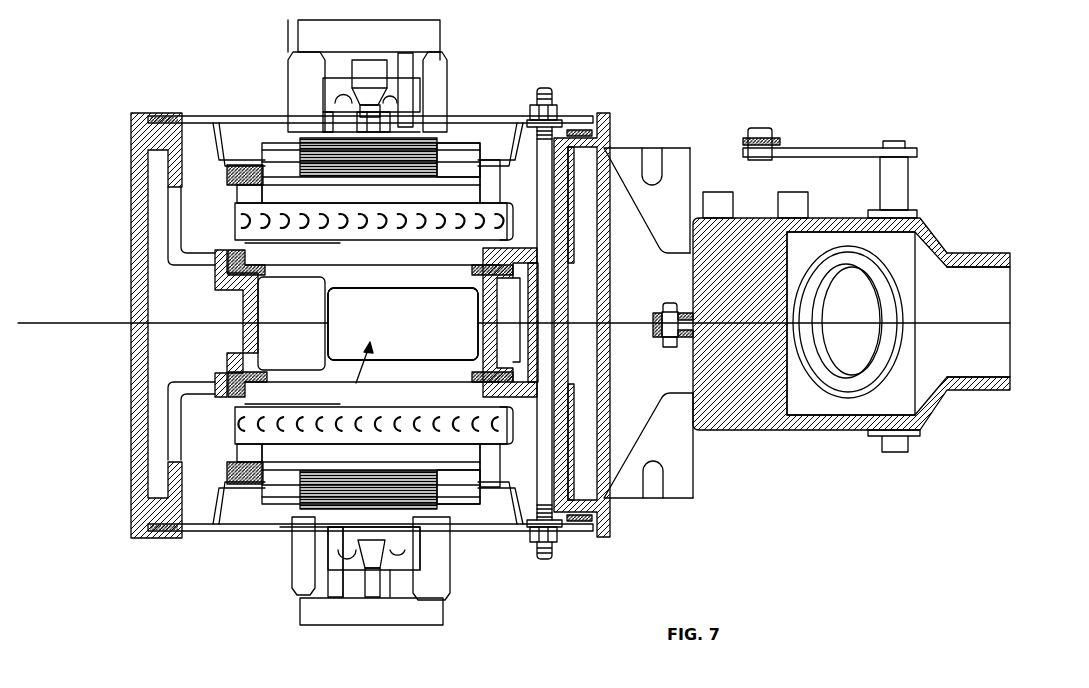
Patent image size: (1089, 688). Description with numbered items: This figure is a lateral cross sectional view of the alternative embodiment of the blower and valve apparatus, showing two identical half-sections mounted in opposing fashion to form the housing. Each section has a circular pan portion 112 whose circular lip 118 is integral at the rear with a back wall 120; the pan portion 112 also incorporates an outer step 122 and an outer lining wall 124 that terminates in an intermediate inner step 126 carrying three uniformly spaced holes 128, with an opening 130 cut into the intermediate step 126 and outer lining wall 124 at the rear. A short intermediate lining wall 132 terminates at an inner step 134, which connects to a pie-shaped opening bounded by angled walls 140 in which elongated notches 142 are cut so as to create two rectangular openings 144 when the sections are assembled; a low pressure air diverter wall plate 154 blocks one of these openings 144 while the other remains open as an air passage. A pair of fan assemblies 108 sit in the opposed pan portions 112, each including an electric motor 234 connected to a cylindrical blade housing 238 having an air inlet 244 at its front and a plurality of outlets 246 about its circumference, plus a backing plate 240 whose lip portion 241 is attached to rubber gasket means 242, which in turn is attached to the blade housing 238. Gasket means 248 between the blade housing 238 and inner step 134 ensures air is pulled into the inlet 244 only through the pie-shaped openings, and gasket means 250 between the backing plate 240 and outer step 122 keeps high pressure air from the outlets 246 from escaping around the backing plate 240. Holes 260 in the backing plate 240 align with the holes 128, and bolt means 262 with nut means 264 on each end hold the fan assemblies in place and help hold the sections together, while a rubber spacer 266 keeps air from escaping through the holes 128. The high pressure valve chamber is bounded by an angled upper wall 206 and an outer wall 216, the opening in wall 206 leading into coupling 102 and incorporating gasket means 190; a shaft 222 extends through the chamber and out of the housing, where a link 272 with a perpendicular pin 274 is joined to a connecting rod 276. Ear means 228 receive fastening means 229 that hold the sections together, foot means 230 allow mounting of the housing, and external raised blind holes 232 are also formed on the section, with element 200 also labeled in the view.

The coupling 102 is at (1012, 323).
The fan assembly 108 is at (378, 645).
The circular pan portion 112 is at (113, 217).
The circular lip 118 is at (604, 140).
The back wall 120 is at (131, 304).
The outer step 122 is at (163, 128).
The outer lining wall 124 is at (570, 182).
The intermediate inner step 126 is at (517, 242).
The holes 128 is at (568, 250).
The opening 130 is at (184, 223).
The short intermediate lining wall 132 is at (222, 298).
The inner step 134 is at (266, 274).
The angled walls 140 is at (357, 285).
The elongated notches 142 is at (421, 302).
The rectangular openings 144 is at (315, 339).
The low pressure air diverter wall plate 154 is at (396, 339).
The gasket means 190 is at (879, 381).
The mounting foot 200 is at (626, 150).
The angled upper wall 206 is at (790, 251).
The outer wall 216 is at (735, 432).
The shaft 222 is at (908, 196).
The ear means 228 is at (658, 313).
The fastening means 229 is at (673, 348).
The foot means 230 is at (692, 153).
The external raised blind holes 232 is at (723, 192).
The electric motor 234 is at (445, 602).
The cylindrical blade housing 238 is at (367, 414).
The backing plate 240 is at (220, 522).
The lip portion 241 is at (513, 487).
The rubber gasket means 242 is at (230, 473).
The air inlet 244 is at (398, 364).
The outlets 246 is at (237, 423).
The gasket means 248 is at (262, 372).
The gasket means 250 is at (163, 520).
The holes 260 is at (575, 524).
The bolt means 262 is at (546, 560).
The nut means 264 is at (530, 543).
The rubber spacer 266 is at (566, 308).
The link 272 is at (853, 147).
The perpendicular pin 274 is at (760, 128).
The connecting rod 276 is at (781, 142).